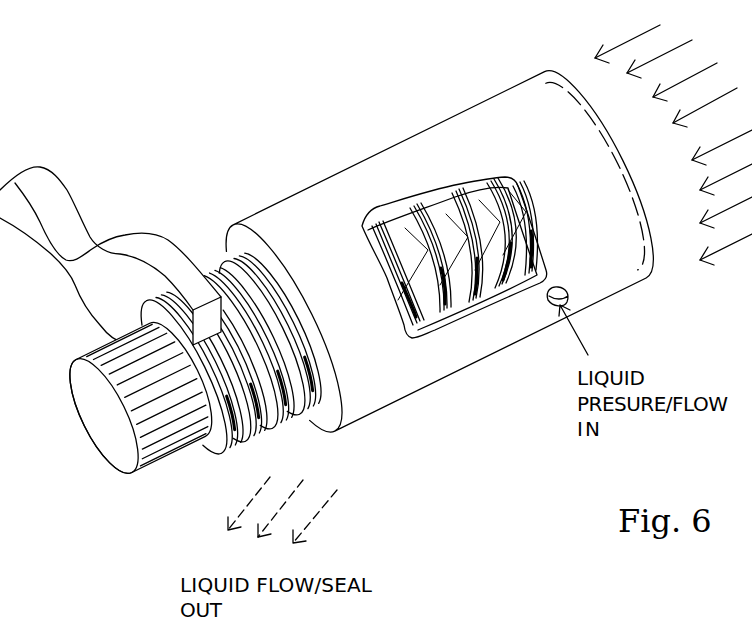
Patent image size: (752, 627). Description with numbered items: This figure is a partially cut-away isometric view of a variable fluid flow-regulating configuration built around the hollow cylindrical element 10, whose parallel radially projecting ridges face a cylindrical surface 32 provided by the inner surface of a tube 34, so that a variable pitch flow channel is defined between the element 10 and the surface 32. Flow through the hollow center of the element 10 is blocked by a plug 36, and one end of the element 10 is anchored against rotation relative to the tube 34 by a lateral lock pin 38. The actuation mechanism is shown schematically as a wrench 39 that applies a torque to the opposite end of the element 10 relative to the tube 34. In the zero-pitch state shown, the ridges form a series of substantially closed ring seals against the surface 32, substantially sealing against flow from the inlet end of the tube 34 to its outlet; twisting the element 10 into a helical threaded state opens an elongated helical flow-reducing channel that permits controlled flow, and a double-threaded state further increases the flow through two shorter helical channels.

The cylindrical element 10 is at (337, 274).
The cylindrical surface 32 is at (478, 215).
The tube 34 is at (410, 396).
The plug 36 is at (97, 417).
The lateral lock pin 38 is at (553, 307).
The wrench 39 is at (62, 211).